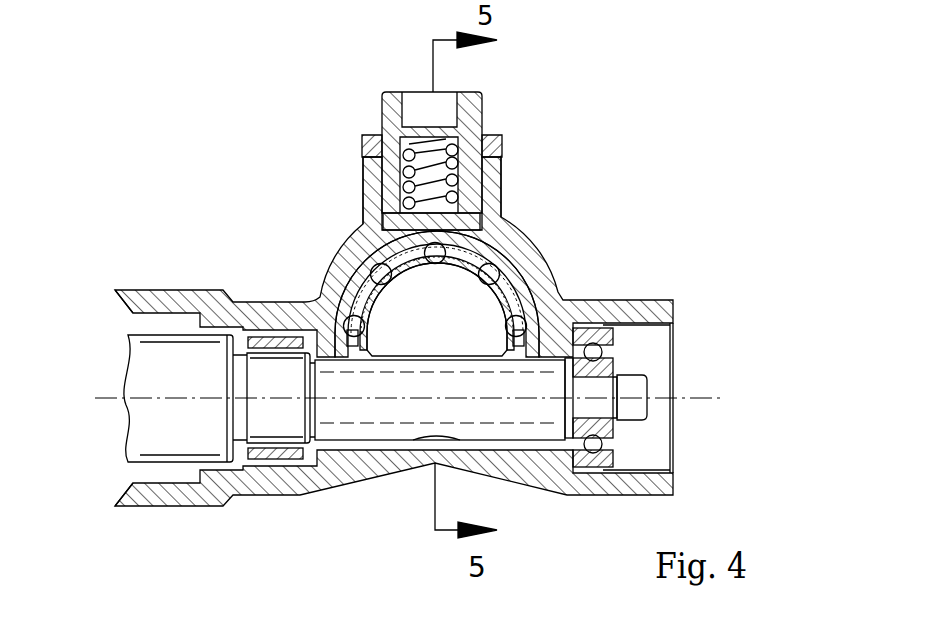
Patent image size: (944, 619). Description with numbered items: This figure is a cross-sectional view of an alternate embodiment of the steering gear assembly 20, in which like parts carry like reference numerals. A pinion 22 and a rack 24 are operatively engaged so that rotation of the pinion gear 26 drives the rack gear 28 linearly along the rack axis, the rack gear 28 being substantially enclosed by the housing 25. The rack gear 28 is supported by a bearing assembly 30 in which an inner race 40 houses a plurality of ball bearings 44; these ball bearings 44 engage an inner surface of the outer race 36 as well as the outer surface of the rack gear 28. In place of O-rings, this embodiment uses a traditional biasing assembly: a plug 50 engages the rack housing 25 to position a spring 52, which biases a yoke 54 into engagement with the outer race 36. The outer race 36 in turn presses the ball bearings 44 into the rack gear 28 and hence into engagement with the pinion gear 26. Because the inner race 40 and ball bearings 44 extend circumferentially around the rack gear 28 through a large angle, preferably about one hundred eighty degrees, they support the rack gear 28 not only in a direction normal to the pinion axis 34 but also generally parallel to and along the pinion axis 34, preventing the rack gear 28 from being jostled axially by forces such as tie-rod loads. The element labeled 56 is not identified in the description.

The steering gear assembly 20 is at (225, 145).
The pinion 22 is at (383, 453).
The rack 24 is at (312, 269).
The housing 25 is at (392, 313).
The pinion gear 26 is at (350, 430).
The rack gear 28 is at (370, 267).
The bearing assembly 30 is at (343, 253).
The pinion axis 34 is at (187, 400).
The outer race 36 is at (503, 183).
The inner race 40 is at (523, 257).
The ball bearings 44 is at (330, 282).
The plug 50 is at (477, 97).
The spring 52 is at (387, 128).
The yoke 54 is at (377, 213).
The spring seat 56 is at (505, 215).